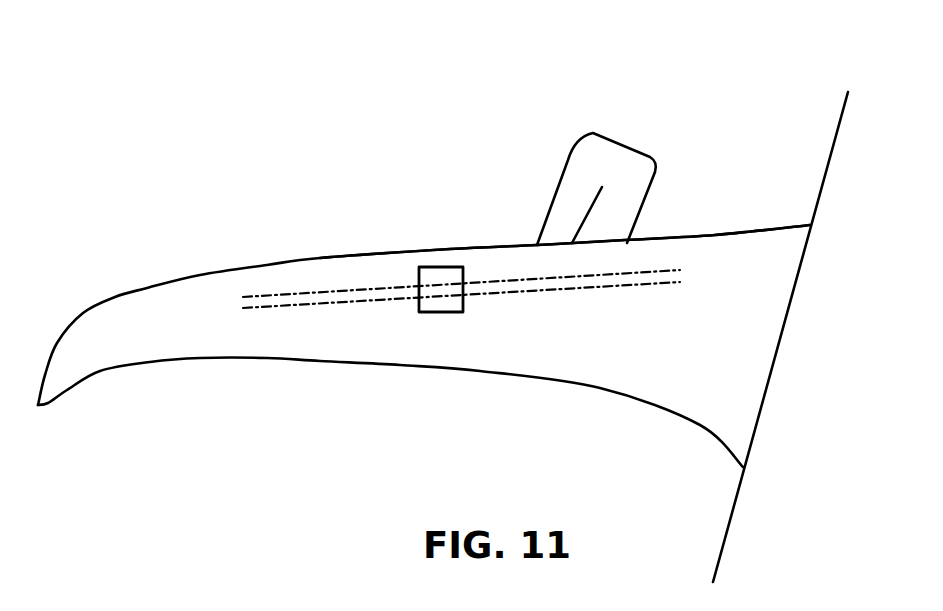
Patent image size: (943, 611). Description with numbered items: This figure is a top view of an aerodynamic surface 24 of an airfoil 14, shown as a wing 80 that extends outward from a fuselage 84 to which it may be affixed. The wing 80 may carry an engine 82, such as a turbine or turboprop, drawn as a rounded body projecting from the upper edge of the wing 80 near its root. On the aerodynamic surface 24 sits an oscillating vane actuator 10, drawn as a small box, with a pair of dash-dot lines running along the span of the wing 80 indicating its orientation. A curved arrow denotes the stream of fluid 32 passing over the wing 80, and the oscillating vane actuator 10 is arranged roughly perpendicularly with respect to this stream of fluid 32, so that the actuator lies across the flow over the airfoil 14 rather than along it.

The oscillating vane actuator 10 is at (437, 267).
The airfoil 14 is at (424, 307).
The aerodynamic surface 24 is at (714, 262).
The stream of fluid 32 is at (294, 456).
The wing 80 is at (147, 288).
The engine 82 is at (565, 163).
The fuselage 84 is at (839, 126).